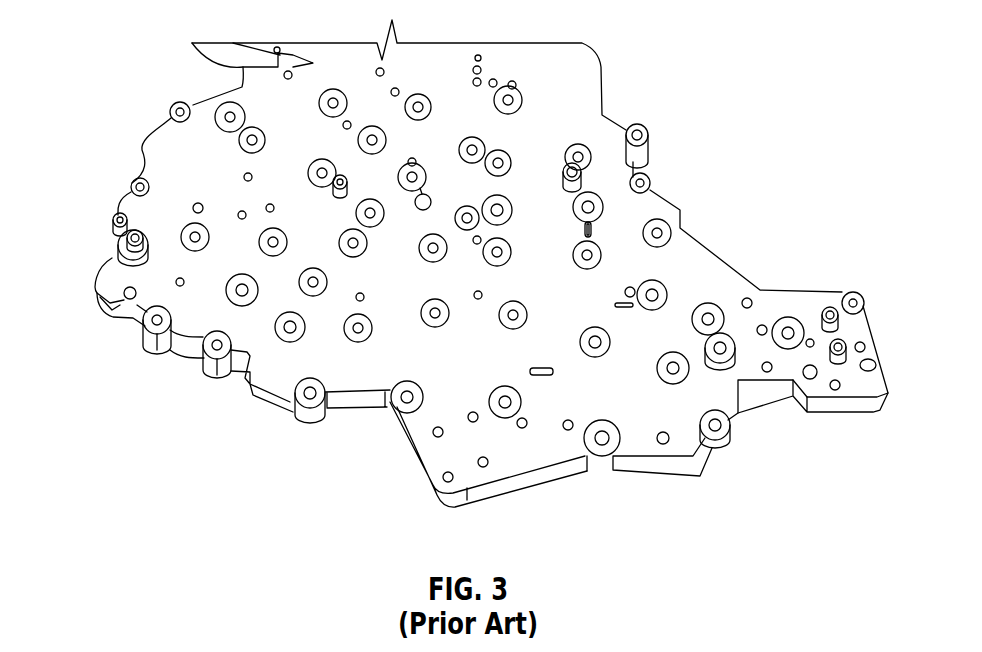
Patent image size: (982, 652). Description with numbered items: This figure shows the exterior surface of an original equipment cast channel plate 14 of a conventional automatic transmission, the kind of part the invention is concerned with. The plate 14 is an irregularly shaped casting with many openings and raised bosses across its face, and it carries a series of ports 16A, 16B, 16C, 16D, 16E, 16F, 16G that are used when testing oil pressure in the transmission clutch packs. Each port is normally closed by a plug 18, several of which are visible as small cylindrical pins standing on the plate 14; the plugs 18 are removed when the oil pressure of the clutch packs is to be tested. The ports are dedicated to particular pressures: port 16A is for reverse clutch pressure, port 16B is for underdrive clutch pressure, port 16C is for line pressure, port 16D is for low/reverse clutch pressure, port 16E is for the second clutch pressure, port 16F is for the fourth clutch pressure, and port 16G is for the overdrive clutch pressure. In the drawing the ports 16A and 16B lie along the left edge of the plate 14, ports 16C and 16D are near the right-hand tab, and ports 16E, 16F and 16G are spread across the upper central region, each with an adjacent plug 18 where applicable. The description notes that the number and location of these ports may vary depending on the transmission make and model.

The channel plate 14 is at (493, 367).
The port 16A is at (115, 243).
The port 16B is at (110, 307).
The port 16C is at (846, 360).
The port 16D is at (822, 318).
The port 16E is at (313, 242).
The port 16F is at (428, 194).
The port 16G is at (567, 190).
The plug 18 is at (117, 214).